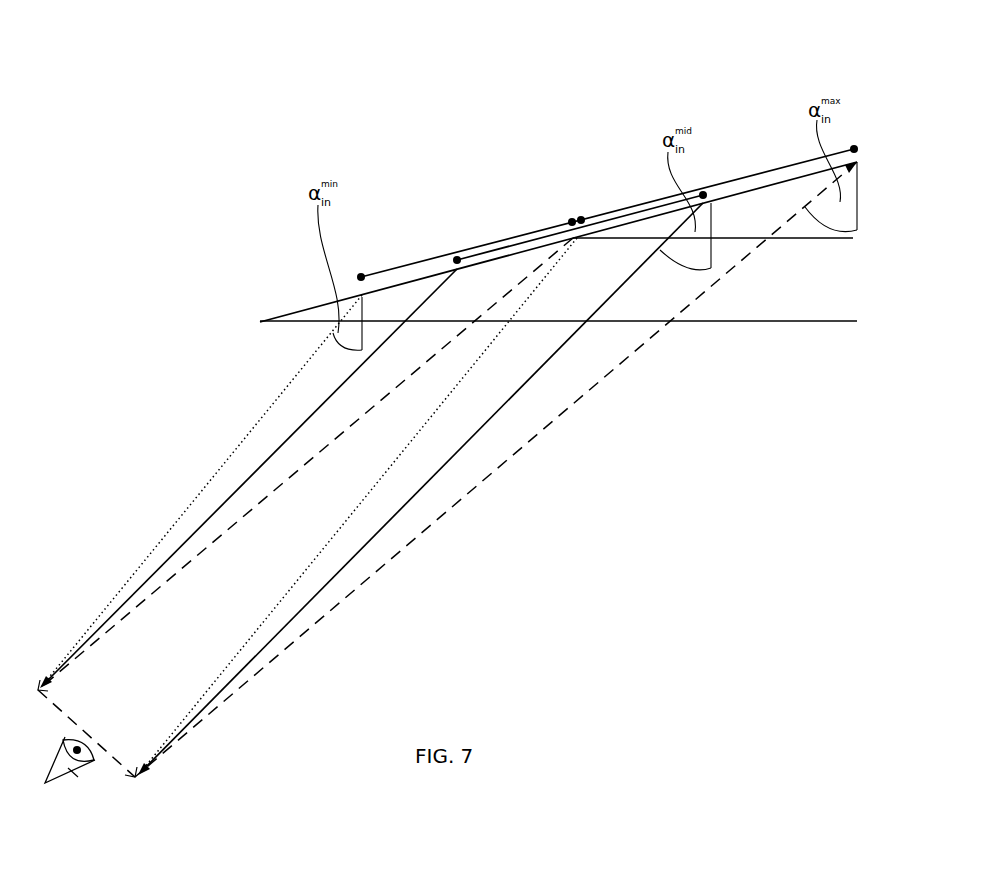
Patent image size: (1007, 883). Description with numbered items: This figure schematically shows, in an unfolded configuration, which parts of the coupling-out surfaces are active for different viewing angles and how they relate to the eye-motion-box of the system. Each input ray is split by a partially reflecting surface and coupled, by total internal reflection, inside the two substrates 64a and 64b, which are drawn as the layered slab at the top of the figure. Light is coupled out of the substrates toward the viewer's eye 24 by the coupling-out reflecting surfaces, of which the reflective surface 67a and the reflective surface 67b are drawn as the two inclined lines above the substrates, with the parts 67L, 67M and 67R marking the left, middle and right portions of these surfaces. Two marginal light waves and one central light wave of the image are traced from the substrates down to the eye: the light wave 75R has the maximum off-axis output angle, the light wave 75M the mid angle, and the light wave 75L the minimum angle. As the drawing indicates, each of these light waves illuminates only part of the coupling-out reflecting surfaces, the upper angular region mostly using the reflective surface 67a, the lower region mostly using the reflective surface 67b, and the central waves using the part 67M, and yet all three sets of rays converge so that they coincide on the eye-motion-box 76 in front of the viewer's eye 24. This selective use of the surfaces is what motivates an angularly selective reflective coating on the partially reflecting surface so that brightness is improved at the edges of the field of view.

The reflective surface 67a is at (792, 179).
The reflective surface 67b is at (405, 283).
The part of coupling-out reflecting surfaces 67L is at (487, 243).
The part of coupling-out reflecting surfaces 67M is at (605, 220).
The part of coupling-out reflecting surfaces 67R is at (753, 175).
The substrate 64a is at (750, 213).
The substrate 64b is at (752, 283).
The light wave 75L is at (378, 480).
The light wave 75M is at (388, 339).
The light wave 75R is at (513, 290).
The eye-motion-box 76 is at (90, 732).
The viewer's eye 24 is at (72, 772).